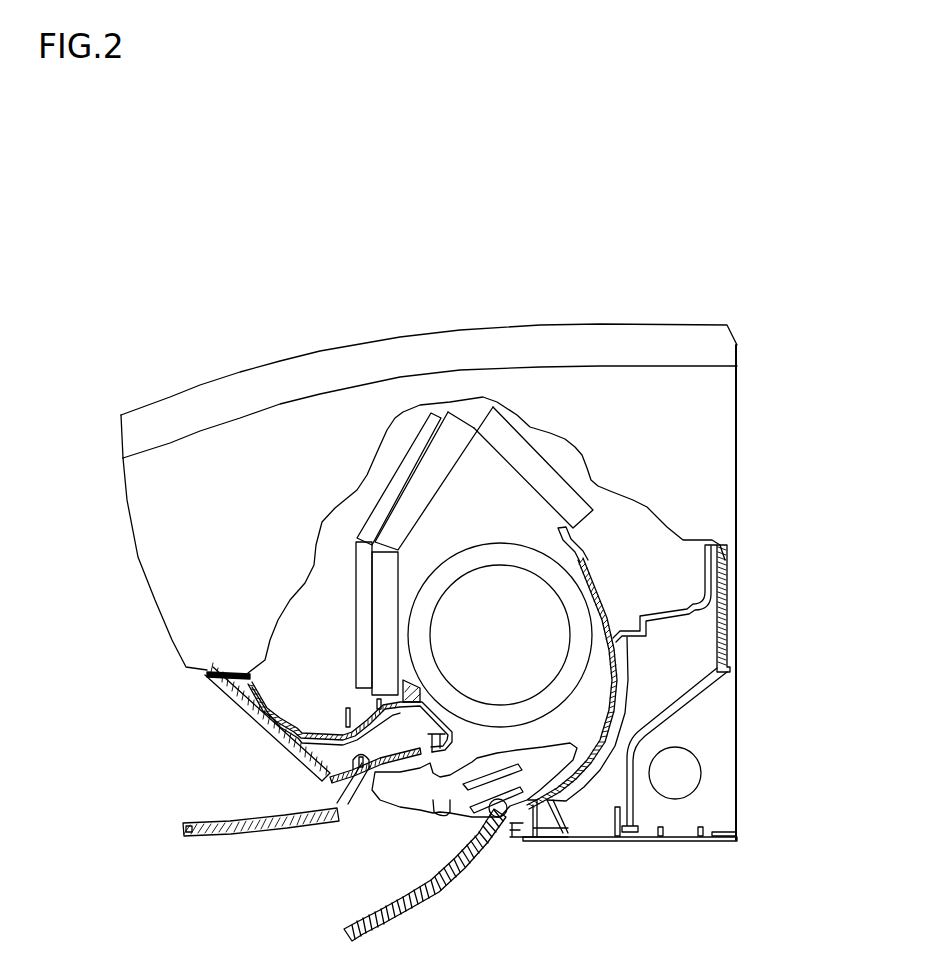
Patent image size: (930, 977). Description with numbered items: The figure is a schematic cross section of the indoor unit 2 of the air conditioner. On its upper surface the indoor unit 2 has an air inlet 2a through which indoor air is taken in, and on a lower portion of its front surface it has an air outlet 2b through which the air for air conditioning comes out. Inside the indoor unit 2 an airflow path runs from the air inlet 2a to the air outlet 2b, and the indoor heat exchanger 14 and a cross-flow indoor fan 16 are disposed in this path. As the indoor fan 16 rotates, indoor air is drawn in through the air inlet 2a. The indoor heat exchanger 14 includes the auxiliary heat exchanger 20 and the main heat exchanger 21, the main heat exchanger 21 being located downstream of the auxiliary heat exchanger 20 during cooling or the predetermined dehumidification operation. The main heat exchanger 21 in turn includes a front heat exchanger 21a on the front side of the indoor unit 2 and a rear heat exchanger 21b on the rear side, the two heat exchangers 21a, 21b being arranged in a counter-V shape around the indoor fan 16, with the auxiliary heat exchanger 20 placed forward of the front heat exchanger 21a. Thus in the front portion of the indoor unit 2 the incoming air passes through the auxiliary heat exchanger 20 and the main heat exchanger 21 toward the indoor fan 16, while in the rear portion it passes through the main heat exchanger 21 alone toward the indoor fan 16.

The indoor unit 2 is at (742, 244).
The air inlet 2a is at (323, 347).
The air outlet 2b is at (322, 797).
The indoor heat exchanger 14 is at (355, 516).
The indoor fan 16 is at (540, 625).
The auxiliary heat exchanger 20 is at (407, 468).
The main heat exchanger 21 is at (667, 392).
The front heat exchanger 21a is at (436, 457).
The rear heat exchanger 21b is at (555, 492).